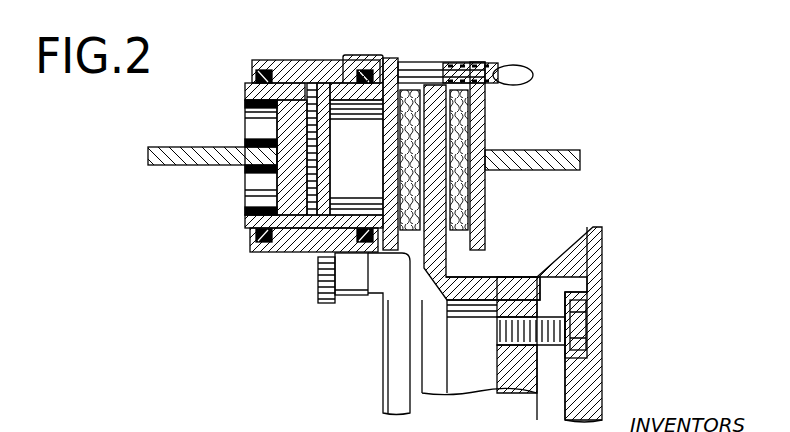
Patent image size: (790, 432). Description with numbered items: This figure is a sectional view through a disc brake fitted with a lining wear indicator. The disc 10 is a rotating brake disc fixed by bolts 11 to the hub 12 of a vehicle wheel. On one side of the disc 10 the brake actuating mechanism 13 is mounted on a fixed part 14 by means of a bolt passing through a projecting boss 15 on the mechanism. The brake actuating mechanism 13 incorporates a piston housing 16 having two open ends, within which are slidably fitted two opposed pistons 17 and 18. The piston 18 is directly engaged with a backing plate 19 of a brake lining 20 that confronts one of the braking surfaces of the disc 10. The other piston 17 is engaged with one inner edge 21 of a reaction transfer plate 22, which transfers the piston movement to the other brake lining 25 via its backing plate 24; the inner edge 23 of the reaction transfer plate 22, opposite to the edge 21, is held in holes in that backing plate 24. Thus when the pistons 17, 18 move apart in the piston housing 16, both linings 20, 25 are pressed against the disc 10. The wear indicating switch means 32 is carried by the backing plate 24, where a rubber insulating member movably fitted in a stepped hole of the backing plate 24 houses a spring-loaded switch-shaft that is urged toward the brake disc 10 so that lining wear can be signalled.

The disc 10 is at (435, 100).
The bolts 11 is at (583, 333).
The hub 12 is at (592, 263).
The brake actuating mechanism 13 is at (270, 254).
The fixed part 14 is at (398, 372).
The projecting boss 15 is at (354, 288).
The piston housing 16 is at (293, 70).
The piston 17 is at (246, 222).
The piston 18 is at (328, 85).
The backing plate 19 is at (391, 66).
The brake lining 20 is at (411, 102).
The inner edge 21 is at (238, 144).
The reaction transfer plate 22 is at (171, 147).
The inner edge 23 is at (490, 156).
The backing plate 24 is at (477, 183).
The brake lining 25 is at (480, 213).
The wear indicating switch means 32 is at (490, 67).